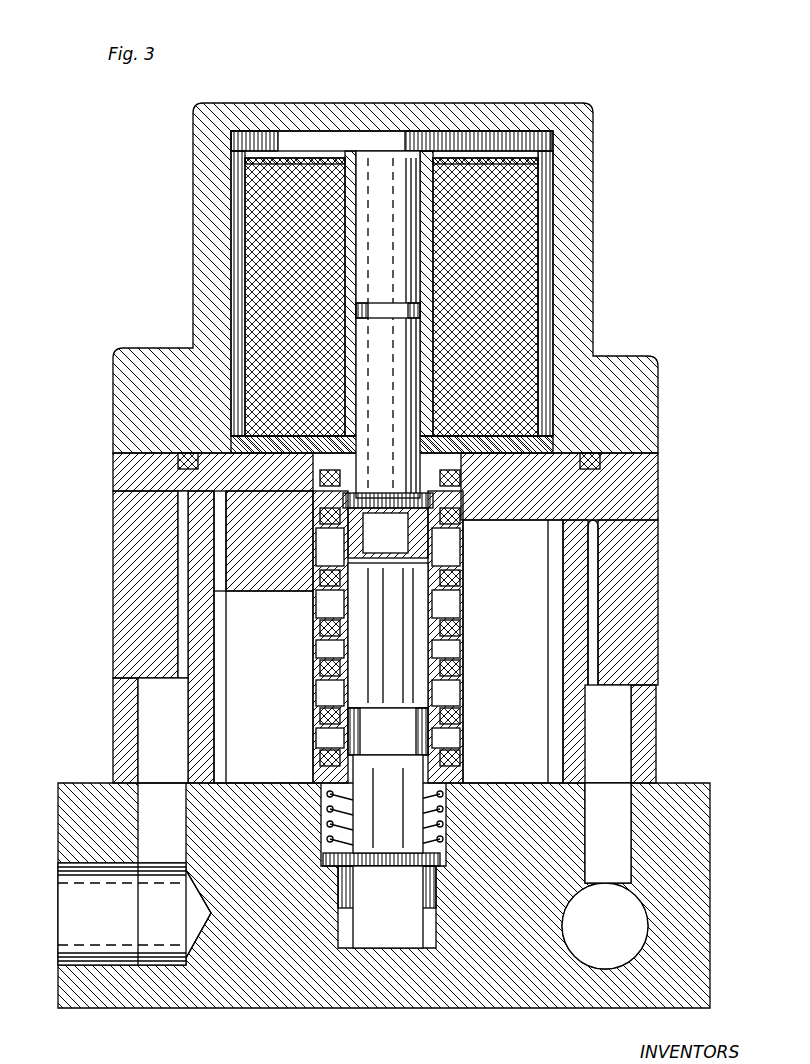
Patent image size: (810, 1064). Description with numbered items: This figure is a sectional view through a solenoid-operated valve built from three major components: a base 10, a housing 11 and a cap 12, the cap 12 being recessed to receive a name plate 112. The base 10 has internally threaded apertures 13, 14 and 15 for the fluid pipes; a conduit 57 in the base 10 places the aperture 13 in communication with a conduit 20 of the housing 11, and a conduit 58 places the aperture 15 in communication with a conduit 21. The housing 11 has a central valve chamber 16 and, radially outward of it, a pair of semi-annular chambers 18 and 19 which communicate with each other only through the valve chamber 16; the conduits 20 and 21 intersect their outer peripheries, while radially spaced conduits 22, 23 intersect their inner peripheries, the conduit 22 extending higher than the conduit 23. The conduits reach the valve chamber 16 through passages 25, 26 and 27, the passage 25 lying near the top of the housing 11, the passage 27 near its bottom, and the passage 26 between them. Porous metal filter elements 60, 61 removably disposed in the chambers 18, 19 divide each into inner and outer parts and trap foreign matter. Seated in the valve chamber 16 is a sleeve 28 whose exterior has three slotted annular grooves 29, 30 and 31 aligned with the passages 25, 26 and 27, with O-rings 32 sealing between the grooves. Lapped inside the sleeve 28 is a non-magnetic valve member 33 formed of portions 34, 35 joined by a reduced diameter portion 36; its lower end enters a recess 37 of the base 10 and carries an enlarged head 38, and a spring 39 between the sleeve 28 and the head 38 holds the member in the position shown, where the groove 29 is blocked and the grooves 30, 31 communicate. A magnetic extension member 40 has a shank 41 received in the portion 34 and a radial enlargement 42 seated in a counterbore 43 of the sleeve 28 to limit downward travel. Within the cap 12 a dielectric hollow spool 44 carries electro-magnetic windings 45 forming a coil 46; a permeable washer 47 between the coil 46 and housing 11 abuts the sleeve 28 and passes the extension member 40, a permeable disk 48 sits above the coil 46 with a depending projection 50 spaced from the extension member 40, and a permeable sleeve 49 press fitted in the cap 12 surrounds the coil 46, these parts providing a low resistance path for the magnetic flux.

The base 10 is at (170, 1012).
The housing 11 is at (652, 602).
The cap 12 is at (580, 190).
The internally threaded aperture 13 is at (640, 922).
The internally threaded aperture 14 is at (380, 942).
The internally threaded aperture 15 is at (62, 873).
The valve chamber 16 is at (442, 706).
The semi-annular chamber 18 is at (590, 540).
The semi-annular chamber 19 is at (172, 542).
The conduit 20 is at (620, 712).
The conduit 21 is at (135, 693).
The conduit 22 is at (520, 765).
The conduit 23 is at (232, 762).
The passage 25 is at (458, 566).
The passage 26 is at (235, 606).
The passage 27 is at (305, 734).
The sleeve 28 is at (442, 550).
The annular groove 29 is at (315, 555).
The annular groove 30 is at (430, 615).
The annular groove 31 is at (315, 710).
The O-rings 32 is at (452, 505).
The valve member 33 is at (335, 684).
The portion of valve member 34 is at (333, 488).
The portion of valve member 35 is at (445, 725).
The reduced diameter portion 36 is at (385, 635).
The recess 37 is at (455, 870).
The enlarged head 38 is at (360, 885).
The spring 39 is at (322, 805).
The extension member 40 is at (415, 384).
The shank 41 is at (378, 497).
The radial enlargement 42 is at (370, 480).
The counterbore 43 is at (425, 488).
The dielectric hollow spool 44 is at (412, 264).
The electro-magnetic windings 45 is at (505, 236).
The coil 46 is at (540, 272).
The washer 47 is at (530, 438).
The disk 48 is at (540, 133).
The sleeve 49 is at (232, 186).
The projection 50 is at (355, 185).
The conduit 57 is at (620, 823).
The conduit 58 is at (135, 797).
The filter element 60 is at (568, 622).
The filter element 61 is at (183, 583).
The name plate 112 is at (395, 97).